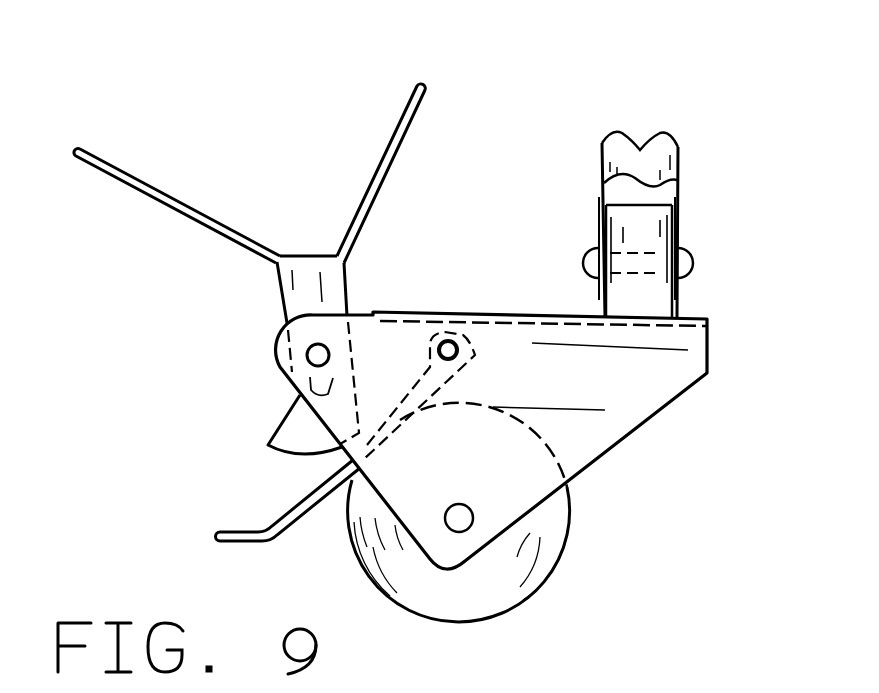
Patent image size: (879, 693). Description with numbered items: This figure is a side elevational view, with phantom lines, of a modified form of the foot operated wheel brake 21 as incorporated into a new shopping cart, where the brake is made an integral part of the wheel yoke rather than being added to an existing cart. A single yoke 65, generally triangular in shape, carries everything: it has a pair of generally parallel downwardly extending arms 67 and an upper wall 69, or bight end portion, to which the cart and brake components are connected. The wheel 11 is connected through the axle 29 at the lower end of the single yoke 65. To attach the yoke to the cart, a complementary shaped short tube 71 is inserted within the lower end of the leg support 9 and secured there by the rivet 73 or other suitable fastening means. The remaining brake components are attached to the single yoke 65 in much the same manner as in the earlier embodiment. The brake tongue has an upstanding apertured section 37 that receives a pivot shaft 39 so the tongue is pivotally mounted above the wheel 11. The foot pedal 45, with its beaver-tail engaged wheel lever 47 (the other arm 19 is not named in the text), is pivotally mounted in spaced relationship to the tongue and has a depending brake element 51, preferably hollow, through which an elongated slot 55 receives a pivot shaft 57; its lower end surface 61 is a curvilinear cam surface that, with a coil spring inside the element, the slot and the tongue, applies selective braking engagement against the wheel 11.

The leg support 9 is at (657, 162).
The wheel 11 is at (442, 592).
The handle arm 19 is at (367, 192).
The foot operated wheel brake 21 is at (287, 207).
The axle 29 is at (461, 532).
The upstanding apertured section 37 is at (467, 338).
The pivot shaft 39 is at (448, 340).
The foot pedal 45 is at (249, 264).
The engaged wheel lever 47 is at (180, 207).
The depending brake element 51 is at (305, 290).
The elongated slot 55 is at (316, 356).
The pivot shaft 57 is at (308, 378).
The lower end surface 61 is at (285, 455).
The single yoke 65 is at (660, 415).
The downwardly extending arm 67 is at (592, 450).
The upper wall 69 is at (700, 320).
The short tube 71 is at (657, 207).
The rivet 73 is at (693, 260).